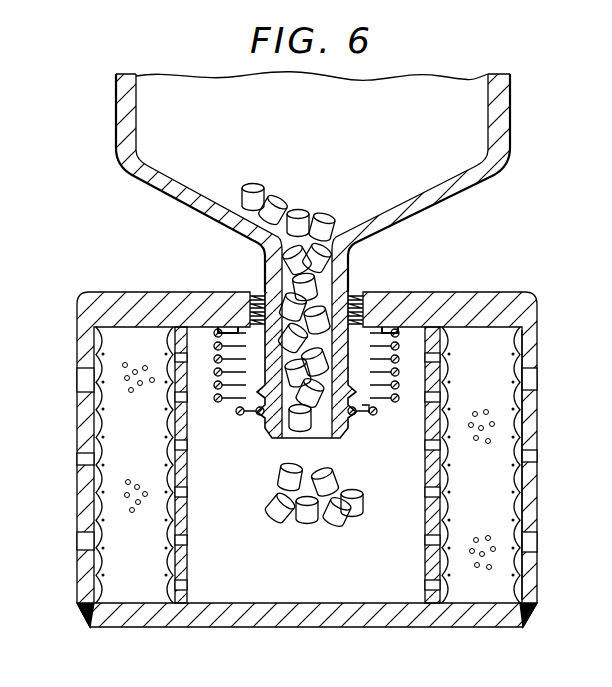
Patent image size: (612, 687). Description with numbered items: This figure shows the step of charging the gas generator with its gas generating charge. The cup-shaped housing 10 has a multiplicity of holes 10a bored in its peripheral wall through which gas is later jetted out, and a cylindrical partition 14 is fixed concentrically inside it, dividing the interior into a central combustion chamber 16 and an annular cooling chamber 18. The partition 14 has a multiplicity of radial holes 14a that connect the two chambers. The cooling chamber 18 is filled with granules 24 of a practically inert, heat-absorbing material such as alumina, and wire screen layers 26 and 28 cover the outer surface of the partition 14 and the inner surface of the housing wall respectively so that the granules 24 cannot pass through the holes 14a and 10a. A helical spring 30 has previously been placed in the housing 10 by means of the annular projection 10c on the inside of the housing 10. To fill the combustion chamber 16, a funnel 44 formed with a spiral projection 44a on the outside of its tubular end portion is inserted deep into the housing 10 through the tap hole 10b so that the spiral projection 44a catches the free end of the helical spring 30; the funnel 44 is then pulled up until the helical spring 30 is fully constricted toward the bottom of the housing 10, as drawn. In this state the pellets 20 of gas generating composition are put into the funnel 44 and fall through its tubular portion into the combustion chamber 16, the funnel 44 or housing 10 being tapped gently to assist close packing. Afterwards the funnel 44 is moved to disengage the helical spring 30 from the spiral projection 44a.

The housing 10 is at (517, 300).
The holes 10a is at (537, 380).
The tap hole 10b is at (353, 294).
The annular projection 10c is at (233, 327).
The cylindrical partition 14 is at (187, 516).
The radial holes 14a is at (425, 494).
The combustion chamber 16 is at (371, 566).
The cooling chamber 18 is at (142, 438).
The pellets 20 is at (301, 212).
The granules 24 is at (118, 500).
The wire screen layer 26 is at (447, 463).
The wire screen layer 28 is at (512, 578).
The helical spring 30 is at (395, 403).
The funnel 44 is at (462, 184).
The spiral projection 44a is at (258, 412).